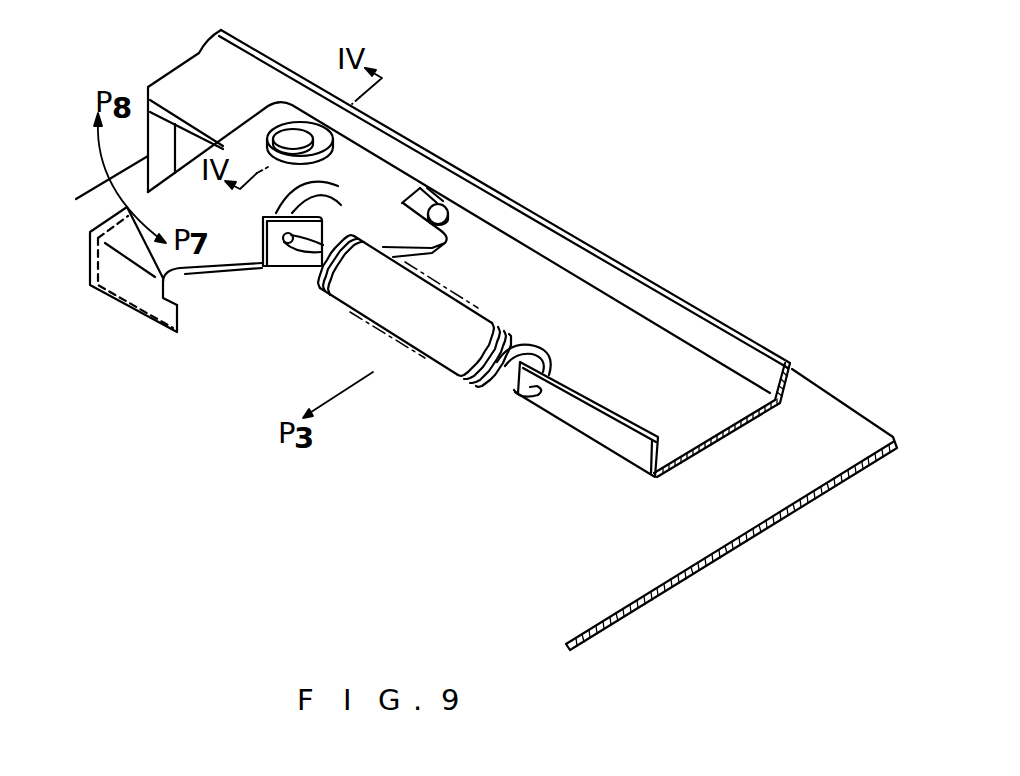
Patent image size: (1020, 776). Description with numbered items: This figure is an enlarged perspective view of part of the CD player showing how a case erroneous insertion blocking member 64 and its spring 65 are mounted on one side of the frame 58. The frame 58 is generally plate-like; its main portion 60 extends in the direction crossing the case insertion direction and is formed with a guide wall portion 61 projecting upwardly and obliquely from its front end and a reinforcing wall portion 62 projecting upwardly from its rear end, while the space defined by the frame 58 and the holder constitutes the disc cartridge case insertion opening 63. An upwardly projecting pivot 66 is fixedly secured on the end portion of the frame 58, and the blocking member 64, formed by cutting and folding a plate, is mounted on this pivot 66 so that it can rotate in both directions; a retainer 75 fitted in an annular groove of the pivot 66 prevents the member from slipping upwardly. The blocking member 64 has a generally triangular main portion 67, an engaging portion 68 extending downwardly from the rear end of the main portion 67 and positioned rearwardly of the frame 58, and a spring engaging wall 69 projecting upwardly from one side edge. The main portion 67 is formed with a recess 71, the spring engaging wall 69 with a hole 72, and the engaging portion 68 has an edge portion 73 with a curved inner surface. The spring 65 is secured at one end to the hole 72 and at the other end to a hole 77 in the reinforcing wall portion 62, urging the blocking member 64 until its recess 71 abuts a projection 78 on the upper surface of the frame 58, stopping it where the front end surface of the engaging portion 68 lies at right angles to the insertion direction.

The frame 58 is at (653, 353).
The main portion 60 is at (713, 443).
The guide wall portion 61 is at (767, 345).
The reinforcing wall portion 62 is at (625, 432).
The disc cartridge case insertion opening 63 is at (767, 430).
The case erroneous insertion blocking member 64 is at (347, 160).
The spring 65 is at (405, 345).
The pivot 66 is at (285, 138).
The main portion 67 is at (232, 240).
The engaging portion 68 is at (120, 288).
The spring engaging wall 69 is at (326, 192).
The recess 71 is at (437, 195).
The hole 72 is at (284, 244).
The edge portion 73 is at (185, 308).
The retainer 75 is at (320, 125).
The hole 77 is at (533, 395).
The projection 78 is at (449, 211).